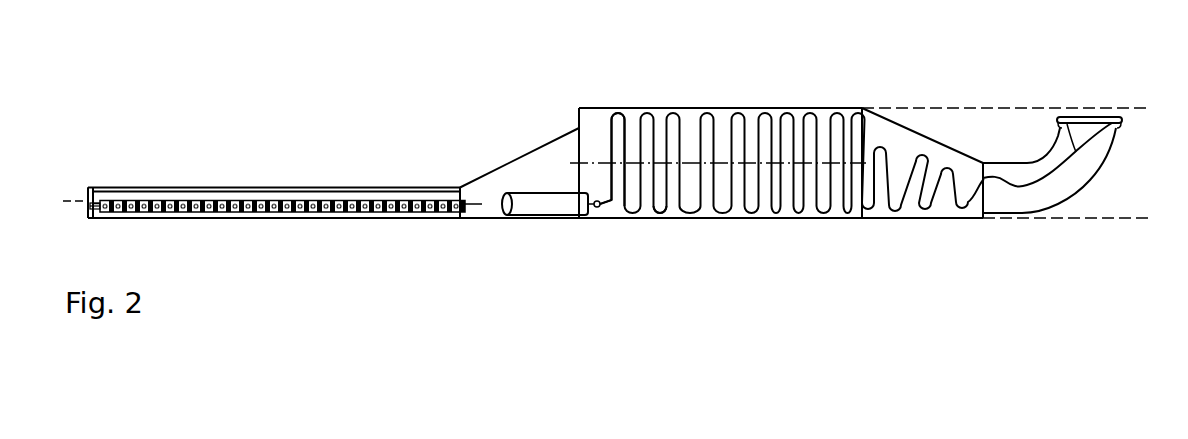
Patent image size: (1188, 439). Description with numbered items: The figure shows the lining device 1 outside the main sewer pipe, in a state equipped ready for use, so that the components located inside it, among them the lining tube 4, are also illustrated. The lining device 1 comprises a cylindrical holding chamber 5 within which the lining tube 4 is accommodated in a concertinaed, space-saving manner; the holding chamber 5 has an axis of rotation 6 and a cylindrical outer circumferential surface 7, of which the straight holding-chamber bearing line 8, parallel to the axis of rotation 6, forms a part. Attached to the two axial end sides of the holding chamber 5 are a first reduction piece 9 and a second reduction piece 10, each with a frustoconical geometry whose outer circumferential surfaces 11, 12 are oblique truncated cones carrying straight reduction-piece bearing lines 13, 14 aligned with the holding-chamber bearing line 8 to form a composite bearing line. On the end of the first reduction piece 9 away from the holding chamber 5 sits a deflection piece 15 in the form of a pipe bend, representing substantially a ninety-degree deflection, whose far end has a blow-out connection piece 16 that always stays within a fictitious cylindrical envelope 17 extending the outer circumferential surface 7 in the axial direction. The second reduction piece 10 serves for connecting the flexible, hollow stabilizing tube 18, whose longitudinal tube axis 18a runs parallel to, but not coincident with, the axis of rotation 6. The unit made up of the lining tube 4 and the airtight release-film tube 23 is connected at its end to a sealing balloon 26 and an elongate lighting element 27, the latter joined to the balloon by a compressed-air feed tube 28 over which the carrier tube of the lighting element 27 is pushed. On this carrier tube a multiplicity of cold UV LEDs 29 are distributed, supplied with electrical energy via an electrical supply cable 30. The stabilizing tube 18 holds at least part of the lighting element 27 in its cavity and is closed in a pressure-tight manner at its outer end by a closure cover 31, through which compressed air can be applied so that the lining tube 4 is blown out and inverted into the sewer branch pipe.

The lining device 1 is at (731, 84).
The lining tube 4 is at (725, 208).
The holding chamber 5 is at (780, 220).
The axis of rotation 6 is at (603, 165).
The cylindrical outer circumferential surface 7 is at (823, 115).
The holding-chamber bearing line 8 is at (660, 220).
The first reduction piece 9 is at (925, 130).
The second reduction piece 10 is at (500, 163).
The outer circumferential surface 11 is at (945, 208).
The outer circumferential surface 12 is at (538, 158).
The reduction-piece bearing line 13 is at (887, 220).
The reduction-piece bearing line 14 is at (525, 219).
The deflection piece 15 is at (1096, 178).
The blow-out connection piece 16 is at (1082, 117).
The fictitious cylindrical envelope 17 is at (993, 108).
The stabilizing tube 18 is at (257, 213).
The longitudinal tube axis 18a is at (82, 205).
The release-film tube 23 is at (679, 209).
The sealing balloon 26 is at (565, 210).
The lighting element 27 is at (200, 213).
The compressed-air feed tube 28 is at (91, 203).
The UV LEDs 29 is at (340, 212).
The electrical supply cable 30 is at (95, 213).
The closure cover 31 is at (90, 202).